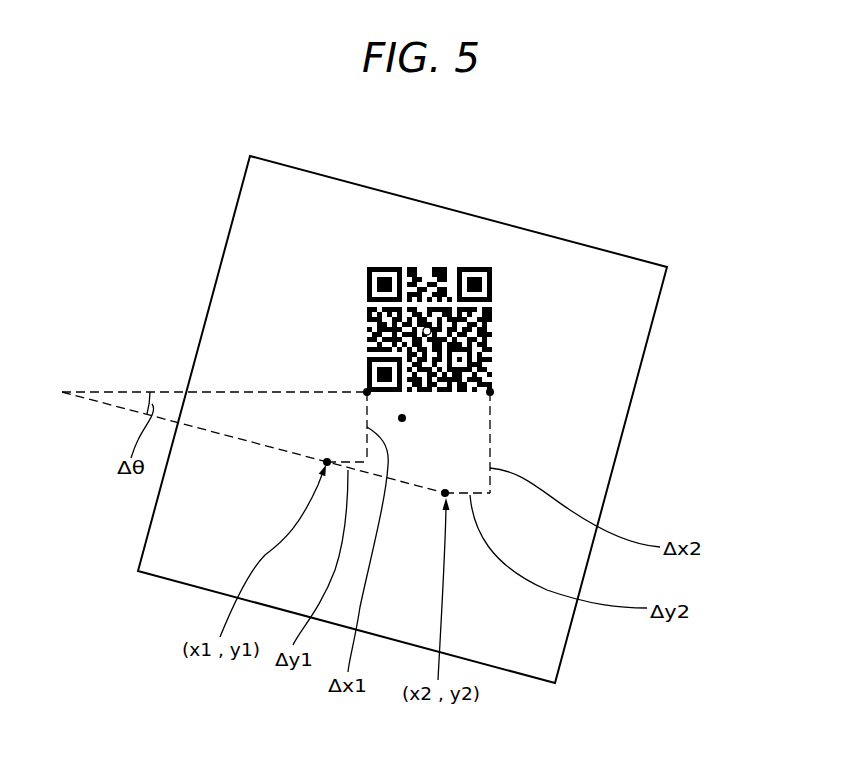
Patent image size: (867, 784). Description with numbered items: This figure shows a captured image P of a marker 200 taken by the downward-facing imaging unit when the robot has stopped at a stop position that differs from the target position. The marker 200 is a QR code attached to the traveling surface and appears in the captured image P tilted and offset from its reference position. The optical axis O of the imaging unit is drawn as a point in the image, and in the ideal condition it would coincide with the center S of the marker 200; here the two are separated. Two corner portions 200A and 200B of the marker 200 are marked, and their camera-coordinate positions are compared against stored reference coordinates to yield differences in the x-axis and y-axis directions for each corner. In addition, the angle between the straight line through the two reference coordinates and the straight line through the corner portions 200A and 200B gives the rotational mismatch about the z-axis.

The marker 200 is at (385, 268).
The corner portion 200A is at (367, 392).
The corner portion 200B is at (490, 392).
The captured image P is at (620, 250).
The center of the marker S is at (427, 331).
The optical axis O is at (402, 418).